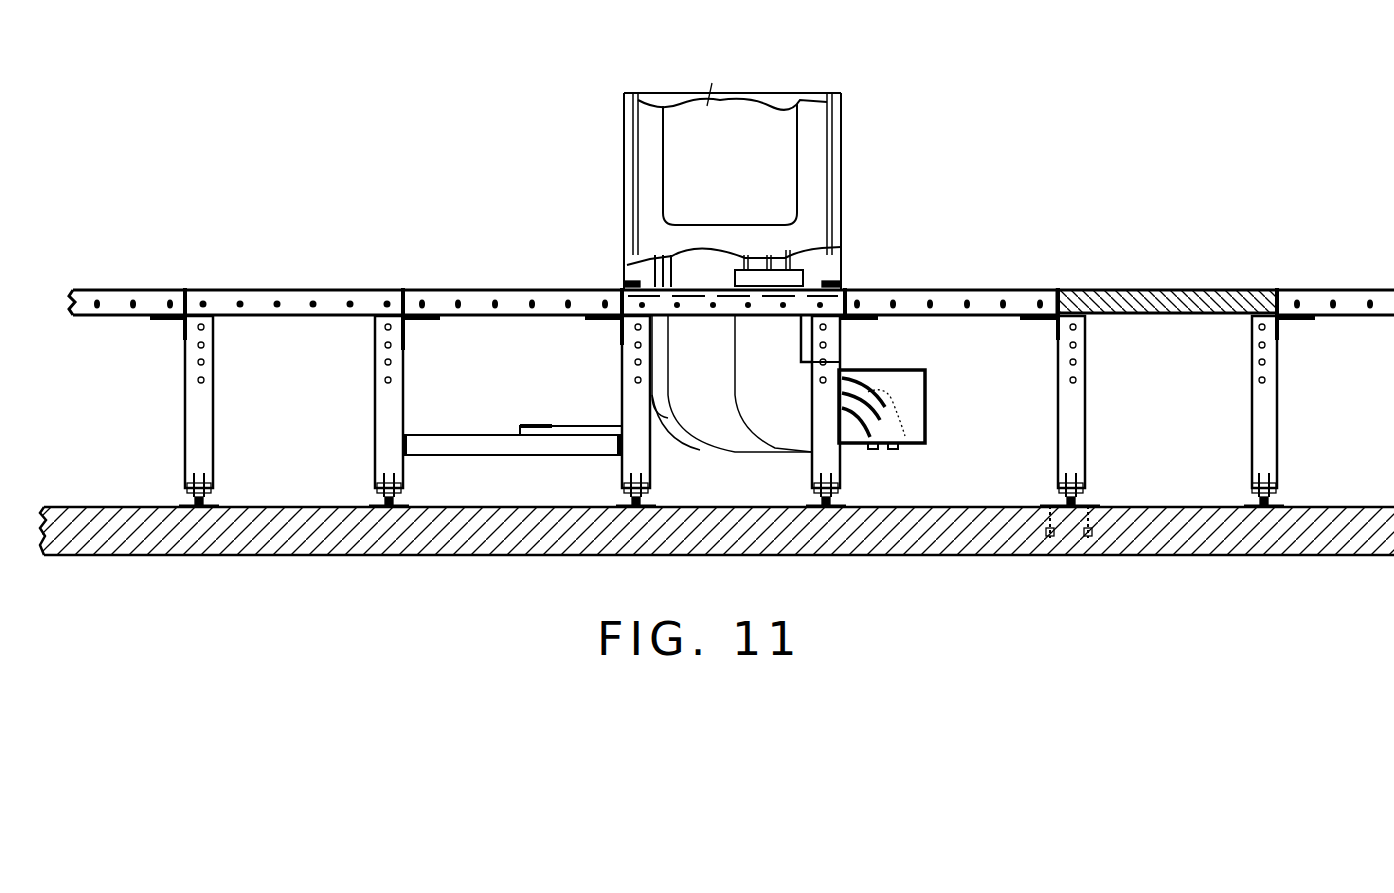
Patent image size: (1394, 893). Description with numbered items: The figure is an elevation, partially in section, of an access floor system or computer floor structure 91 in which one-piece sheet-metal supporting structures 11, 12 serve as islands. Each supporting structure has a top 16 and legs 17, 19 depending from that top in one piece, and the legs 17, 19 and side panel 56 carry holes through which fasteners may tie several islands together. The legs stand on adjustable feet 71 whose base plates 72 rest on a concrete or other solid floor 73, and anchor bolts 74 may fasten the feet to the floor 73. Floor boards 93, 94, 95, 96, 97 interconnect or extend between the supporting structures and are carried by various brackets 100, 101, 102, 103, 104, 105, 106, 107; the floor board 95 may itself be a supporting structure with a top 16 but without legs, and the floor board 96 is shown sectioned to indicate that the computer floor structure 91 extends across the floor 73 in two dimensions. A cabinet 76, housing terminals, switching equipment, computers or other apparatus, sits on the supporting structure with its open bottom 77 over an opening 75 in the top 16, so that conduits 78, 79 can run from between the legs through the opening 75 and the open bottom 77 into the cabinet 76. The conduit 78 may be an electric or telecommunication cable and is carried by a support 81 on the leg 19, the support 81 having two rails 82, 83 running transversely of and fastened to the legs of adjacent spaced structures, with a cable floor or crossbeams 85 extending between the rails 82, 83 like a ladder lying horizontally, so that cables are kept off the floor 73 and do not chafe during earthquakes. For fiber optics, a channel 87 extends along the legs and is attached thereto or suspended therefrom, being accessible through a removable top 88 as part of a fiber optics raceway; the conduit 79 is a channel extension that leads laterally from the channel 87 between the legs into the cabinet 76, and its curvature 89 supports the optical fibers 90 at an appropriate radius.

The supporting structure 11 is at (731, 352).
The supporting structure 12 is at (731, 352).
The top 16 is at (713, 283).
The leg 17 is at (380, 402).
The leg 19 is at (684, 405).
The side panel 56 is at (603, 310).
The adjustable feet 71 is at (208, 502).
The base plates 72 is at (183, 505).
The floor 73 is at (1325, 505).
The anchor bolts 74 is at (1050, 505).
The opening 75 is at (868, 300).
The cabinet 76 is at (622, 143).
The open bottom 77 is at (808, 281).
The conduit 78 is at (595, 425).
The conduit 79 is at (770, 348).
The support 81 is at (512, 444).
The rail 82 is at (618, 457).
The rail 83 is at (405, 457).
The crossbeams 85 is at (553, 447).
The channel 87 is at (927, 422).
The removable top 88 is at (883, 366).
The curvature 89 is at (760, 445).
The optical fibers 90 is at (806, 285).
The computer floor structure 91 is at (425, 290).
The floor board 93 is at (117, 289).
The floor board 94 is at (478, 289).
The floor board 95 is at (975, 290).
The floor board 96 is at (1200, 289).
The floor board 97 is at (1310, 300).
The bracket 100 is at (183, 333).
The bracket 101 is at (405, 336).
The bracket 102 is at (620, 333).
The bracket 103 is at (842, 333).
The bracket 104 is at (1056, 328).
The bracket 105 is at (1077, 335).
The bracket 106 is at (1258, 335).
The bracket 107 is at (1280, 333).